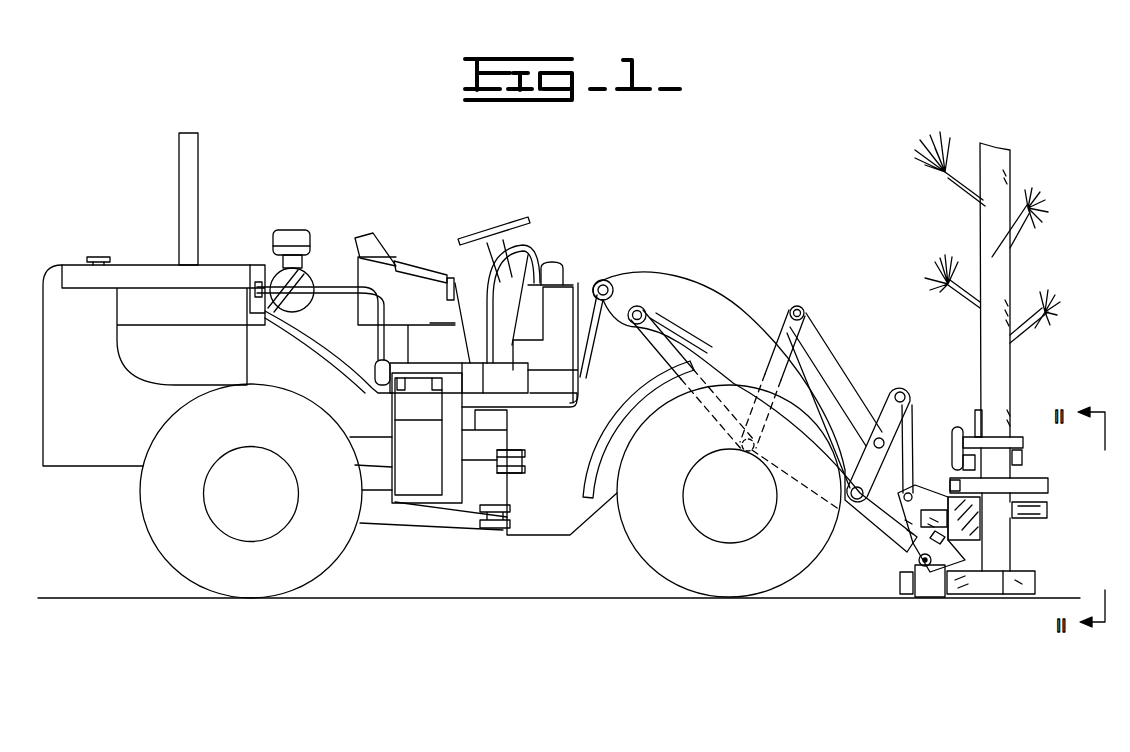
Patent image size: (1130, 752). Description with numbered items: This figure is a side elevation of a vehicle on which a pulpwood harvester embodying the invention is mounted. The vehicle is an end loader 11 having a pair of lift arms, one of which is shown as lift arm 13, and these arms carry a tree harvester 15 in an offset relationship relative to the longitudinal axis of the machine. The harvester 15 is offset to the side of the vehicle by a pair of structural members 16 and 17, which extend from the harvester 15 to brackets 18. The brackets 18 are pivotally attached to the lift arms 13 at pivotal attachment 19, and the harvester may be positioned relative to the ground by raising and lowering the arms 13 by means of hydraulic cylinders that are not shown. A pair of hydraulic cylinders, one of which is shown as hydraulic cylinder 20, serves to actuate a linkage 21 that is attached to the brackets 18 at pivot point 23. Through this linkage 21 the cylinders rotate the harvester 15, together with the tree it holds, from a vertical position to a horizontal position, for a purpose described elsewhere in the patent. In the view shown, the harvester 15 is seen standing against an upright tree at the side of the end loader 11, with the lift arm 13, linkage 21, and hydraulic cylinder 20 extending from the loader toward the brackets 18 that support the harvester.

The end loader 11 is at (607, 230).
The lift arm 13 is at (710, 298).
The tree harvester 15 is at (963, 378).
The structural member 16 is at (897, 540).
The structural member 17 is at (940, 547).
The bracket 18 is at (908, 548).
The pivotal attachment 19 is at (925, 567).
The hydraulic cylinder 20 is at (657, 345).
The linkage 21 is at (811, 288).
The pivot point 23 is at (910, 493).